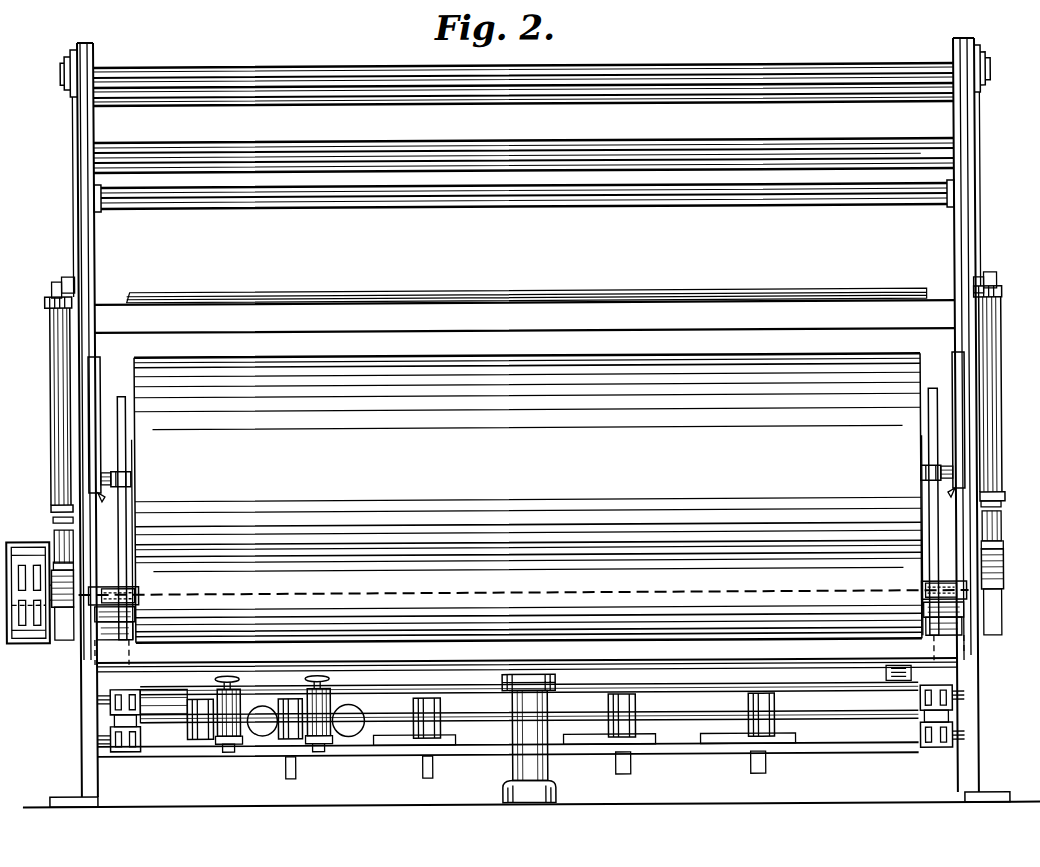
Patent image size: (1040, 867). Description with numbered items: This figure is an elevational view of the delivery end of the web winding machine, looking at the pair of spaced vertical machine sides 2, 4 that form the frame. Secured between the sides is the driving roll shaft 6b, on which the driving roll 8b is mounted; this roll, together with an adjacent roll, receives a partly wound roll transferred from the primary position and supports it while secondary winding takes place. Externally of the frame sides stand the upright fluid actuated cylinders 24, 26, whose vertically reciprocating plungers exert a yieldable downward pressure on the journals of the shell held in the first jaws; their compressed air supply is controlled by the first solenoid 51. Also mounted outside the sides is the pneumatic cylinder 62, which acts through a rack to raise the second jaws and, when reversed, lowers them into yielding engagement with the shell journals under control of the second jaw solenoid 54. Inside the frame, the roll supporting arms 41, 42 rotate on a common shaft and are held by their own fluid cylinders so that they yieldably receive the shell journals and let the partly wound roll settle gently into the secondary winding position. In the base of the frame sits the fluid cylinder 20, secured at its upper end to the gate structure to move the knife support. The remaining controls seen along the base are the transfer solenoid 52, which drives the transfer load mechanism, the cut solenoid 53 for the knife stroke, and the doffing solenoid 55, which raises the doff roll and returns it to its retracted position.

The vertical machine side 2 is at (78, 229).
The vertical machine side 4 is at (970, 243).
The pneumatic cylinder 62 is at (60, 352).
The fluid actuated cylinder 26 is at (60, 540).
The roll supporting arm 41 is at (122, 548).
The roll supporting arm 42 is at (928, 523).
The fluid actuated cylinder 24 is at (995, 527).
The driving roll shaft 6b is at (112, 598).
The driving roll 8b is at (523, 498).
The solenoid 51 is at (200, 728).
The transfer solenoid 52 is at (620, 728).
The cut solenoid 53 is at (752, 724).
The second jaw solenoid 54 is at (290, 728).
The doffing solenoid 55 is at (424, 730).
The fluid cylinder 20 is at (517, 765).